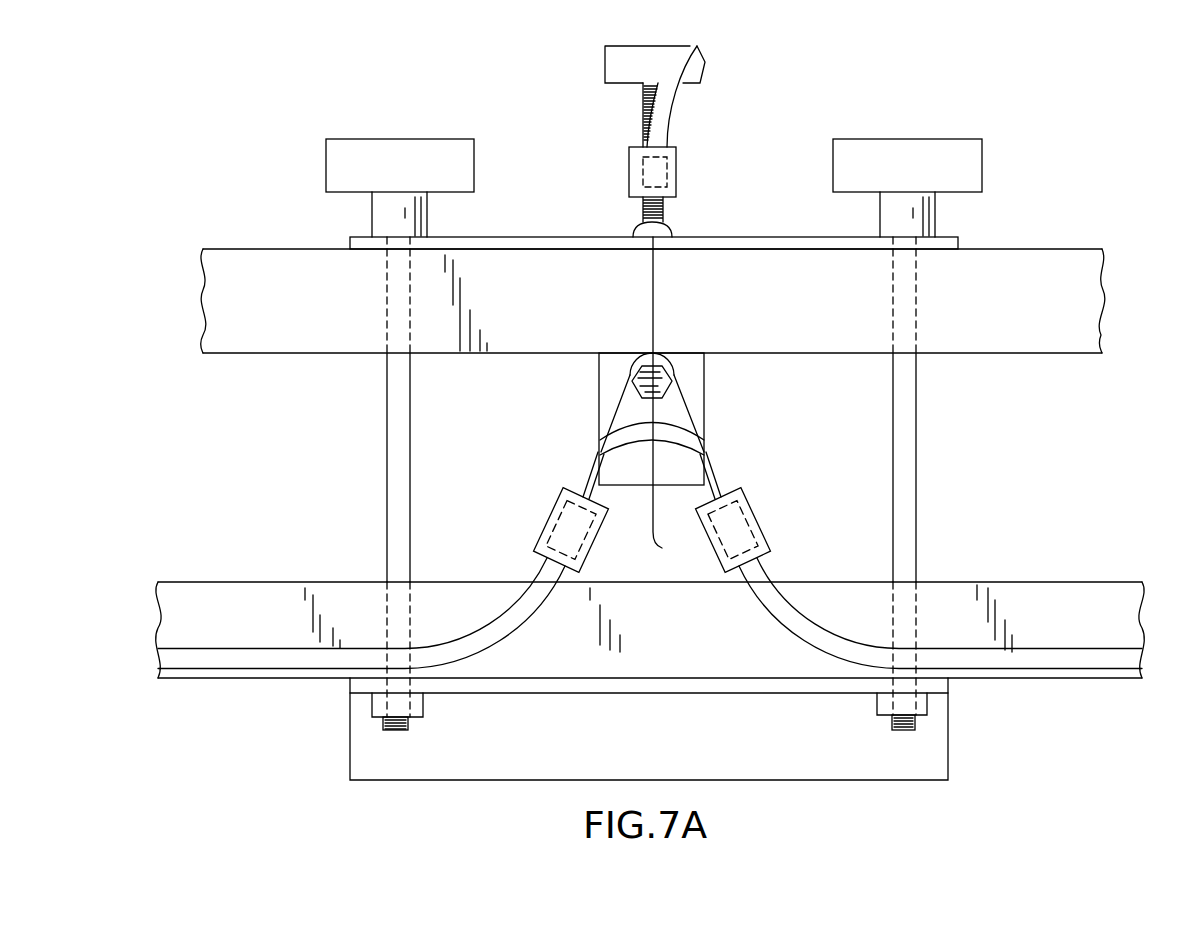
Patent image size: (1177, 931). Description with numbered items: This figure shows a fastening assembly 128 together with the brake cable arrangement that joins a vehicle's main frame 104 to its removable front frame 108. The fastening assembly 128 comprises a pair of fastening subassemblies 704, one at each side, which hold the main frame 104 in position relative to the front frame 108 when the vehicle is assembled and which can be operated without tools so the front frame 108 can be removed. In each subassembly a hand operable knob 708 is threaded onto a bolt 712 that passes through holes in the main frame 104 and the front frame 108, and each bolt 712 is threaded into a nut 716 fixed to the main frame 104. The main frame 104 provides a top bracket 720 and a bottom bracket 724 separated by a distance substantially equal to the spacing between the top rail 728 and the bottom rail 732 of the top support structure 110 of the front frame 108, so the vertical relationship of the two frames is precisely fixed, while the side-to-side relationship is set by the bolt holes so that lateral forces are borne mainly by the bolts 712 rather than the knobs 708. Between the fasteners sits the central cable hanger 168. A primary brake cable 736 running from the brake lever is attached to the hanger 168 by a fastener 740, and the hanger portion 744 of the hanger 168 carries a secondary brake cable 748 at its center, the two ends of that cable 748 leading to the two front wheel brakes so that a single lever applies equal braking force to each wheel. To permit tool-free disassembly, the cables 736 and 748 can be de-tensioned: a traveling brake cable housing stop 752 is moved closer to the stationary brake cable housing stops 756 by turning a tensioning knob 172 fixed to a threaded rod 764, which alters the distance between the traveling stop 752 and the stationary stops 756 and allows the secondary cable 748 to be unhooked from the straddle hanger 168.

The main frame 104 is at (650, 676).
The front frame 108 is at (682, 283).
The top support structure 110 is at (1017, 263).
The fastening assembly 128 is at (666, 402).
The central cable hanger 168 is at (680, 412).
The tensioning knob 172 is at (605, 63).
The fastening subassembly 704 is at (372, 442).
The hand operable knob 708 is at (370, 158).
The bolt 712 is at (400, 400).
The nut 716 is at (380, 702).
The top bracket 720 is at (727, 237).
The bottom bracket 724 is at (818, 763).
The top rail 728 is at (1068, 345).
The bottom rail 732 is at (1068, 593).
The primary brake cable 736 is at (652, 297).
The fastener 740 is at (668, 373).
The hanger portion 744 is at (678, 425).
The secondary brake cable 748 is at (595, 468).
The traveling brake cable housing stop 752 is at (629, 167).
The stationary brake cable housing stop 756 is at (552, 513).
The threaded rod 764 is at (643, 98).